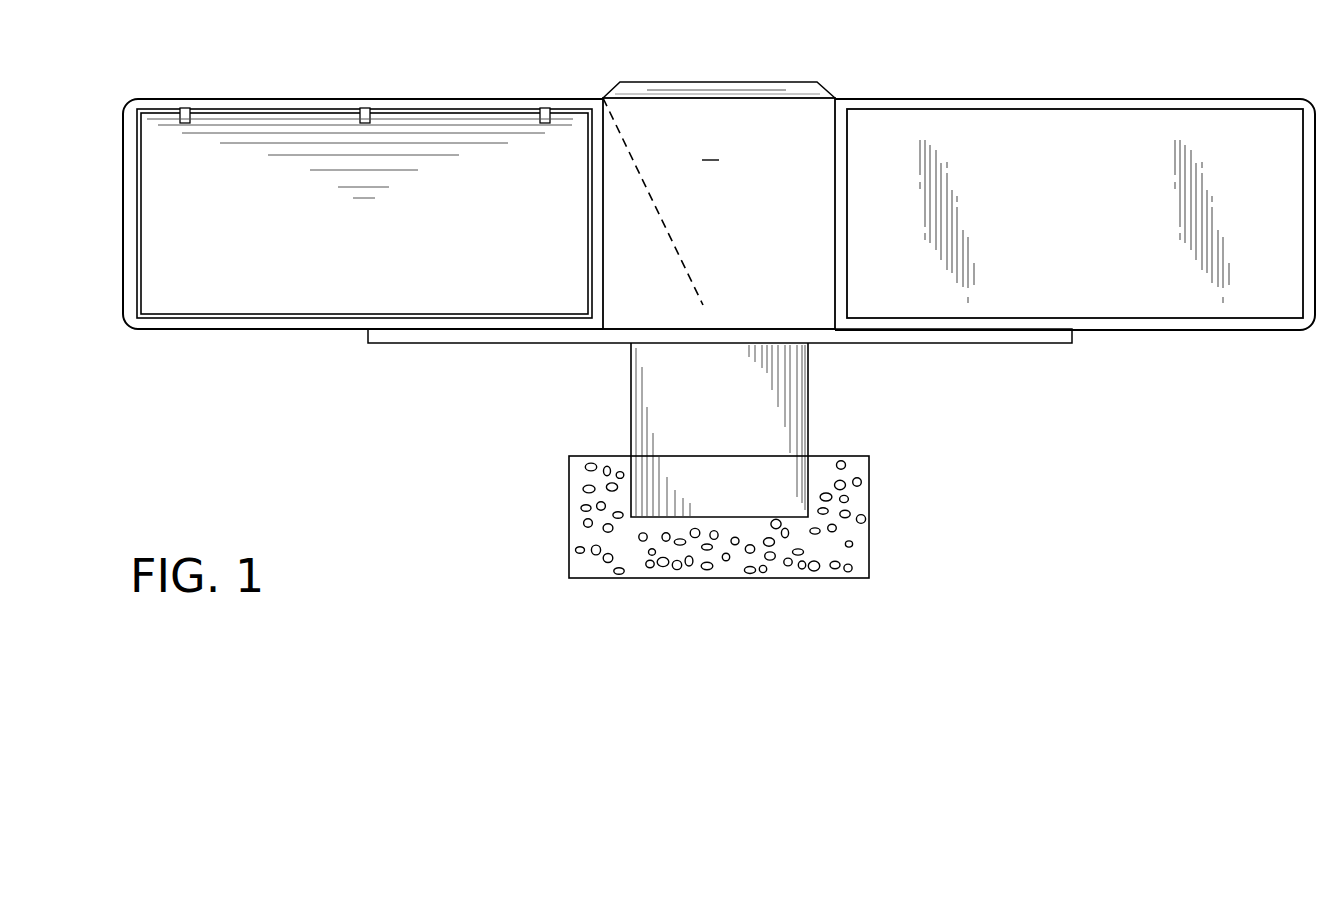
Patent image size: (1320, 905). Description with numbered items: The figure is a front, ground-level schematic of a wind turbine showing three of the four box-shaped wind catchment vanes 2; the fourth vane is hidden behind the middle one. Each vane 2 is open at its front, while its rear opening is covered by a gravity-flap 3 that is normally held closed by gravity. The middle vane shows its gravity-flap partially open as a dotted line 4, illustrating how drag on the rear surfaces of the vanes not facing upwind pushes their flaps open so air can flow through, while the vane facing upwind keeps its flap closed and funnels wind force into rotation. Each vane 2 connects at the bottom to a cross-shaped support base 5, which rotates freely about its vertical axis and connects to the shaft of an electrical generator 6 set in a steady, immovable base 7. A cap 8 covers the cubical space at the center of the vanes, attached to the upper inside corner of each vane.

The wind catchment vane 2 is at (347, 98).
The gravity-flap 3 is at (373, 242).
The dotted line 4 is at (675, 319).
The cross-shaped support base 5 is at (925, 344).
The electrical generator 6 is at (630, 418).
The immovable base 7 is at (585, 546).
The cap 8 is at (693, 82).